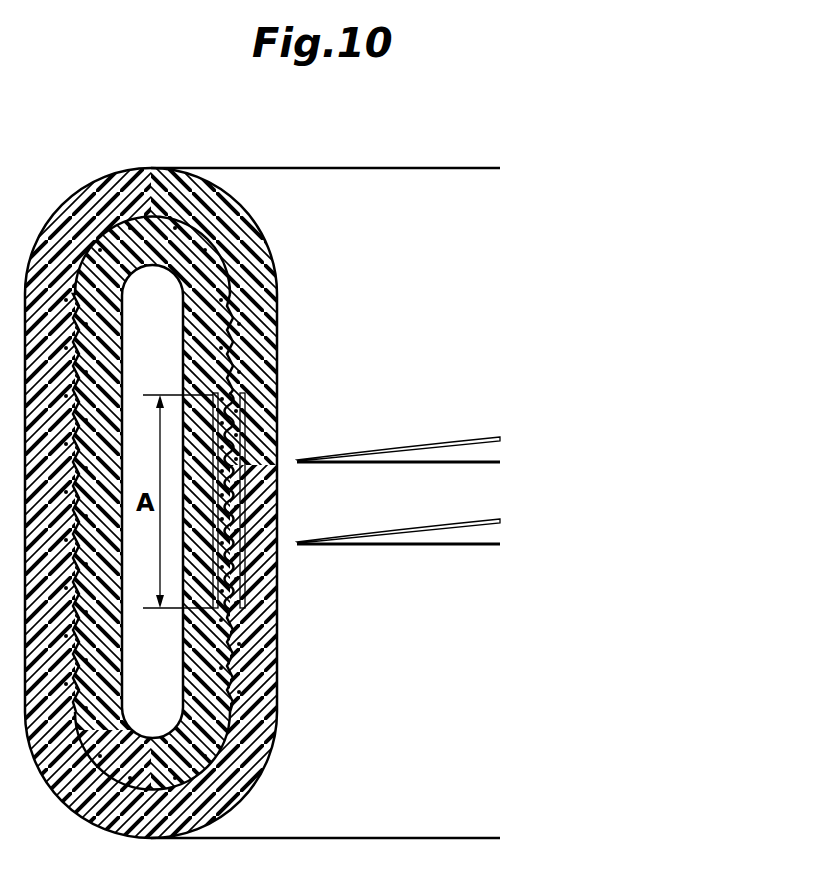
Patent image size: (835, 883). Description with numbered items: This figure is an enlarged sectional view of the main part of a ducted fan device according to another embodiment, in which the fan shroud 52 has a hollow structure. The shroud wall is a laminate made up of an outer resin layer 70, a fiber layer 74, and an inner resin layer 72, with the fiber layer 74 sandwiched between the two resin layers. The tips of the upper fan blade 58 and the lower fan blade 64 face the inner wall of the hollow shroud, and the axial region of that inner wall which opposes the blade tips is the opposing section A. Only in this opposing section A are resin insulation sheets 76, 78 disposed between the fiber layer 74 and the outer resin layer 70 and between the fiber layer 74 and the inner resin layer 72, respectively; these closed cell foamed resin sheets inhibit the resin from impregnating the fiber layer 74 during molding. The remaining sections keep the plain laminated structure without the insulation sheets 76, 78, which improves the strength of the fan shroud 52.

The fan shroud 52 is at (375, 158).
The upper fan blade 58 is at (463, 455).
The lower fan blade 64 is at (472, 536).
The outer resin layer 70 is at (238, 742).
The inner resin layer 72 is at (270, 655).
The fiber layer 74 is at (218, 434).
The resin insulation sheet 76 is at (229, 514).
The resin insulation sheet 78 is at (245, 575).